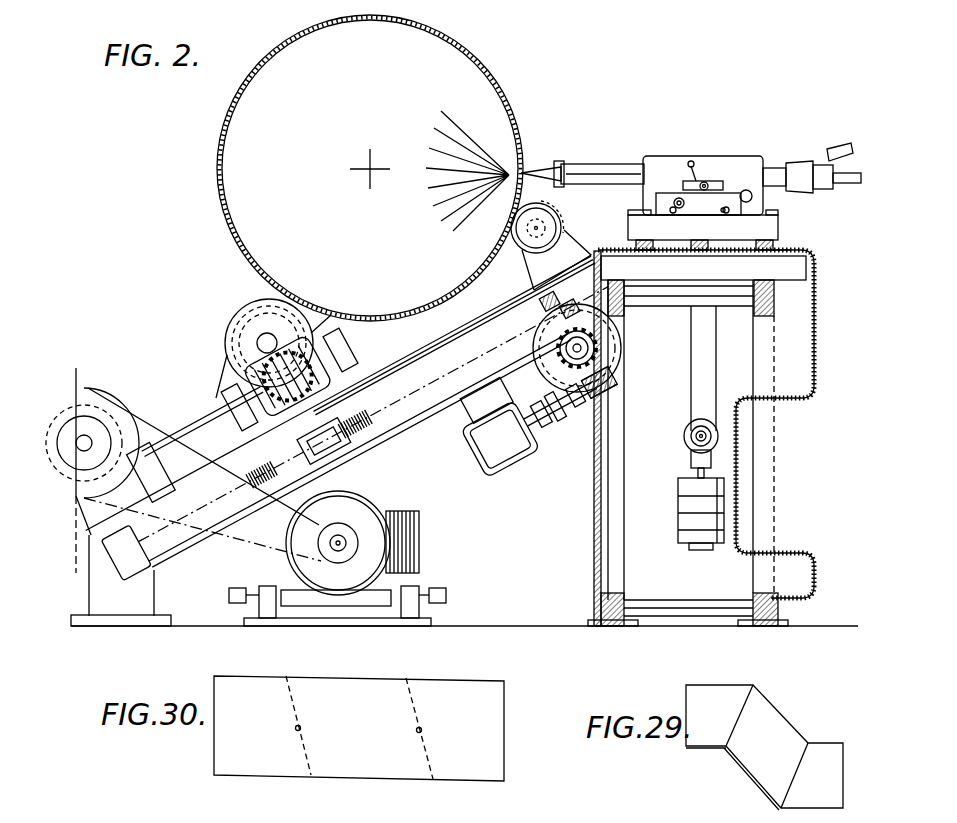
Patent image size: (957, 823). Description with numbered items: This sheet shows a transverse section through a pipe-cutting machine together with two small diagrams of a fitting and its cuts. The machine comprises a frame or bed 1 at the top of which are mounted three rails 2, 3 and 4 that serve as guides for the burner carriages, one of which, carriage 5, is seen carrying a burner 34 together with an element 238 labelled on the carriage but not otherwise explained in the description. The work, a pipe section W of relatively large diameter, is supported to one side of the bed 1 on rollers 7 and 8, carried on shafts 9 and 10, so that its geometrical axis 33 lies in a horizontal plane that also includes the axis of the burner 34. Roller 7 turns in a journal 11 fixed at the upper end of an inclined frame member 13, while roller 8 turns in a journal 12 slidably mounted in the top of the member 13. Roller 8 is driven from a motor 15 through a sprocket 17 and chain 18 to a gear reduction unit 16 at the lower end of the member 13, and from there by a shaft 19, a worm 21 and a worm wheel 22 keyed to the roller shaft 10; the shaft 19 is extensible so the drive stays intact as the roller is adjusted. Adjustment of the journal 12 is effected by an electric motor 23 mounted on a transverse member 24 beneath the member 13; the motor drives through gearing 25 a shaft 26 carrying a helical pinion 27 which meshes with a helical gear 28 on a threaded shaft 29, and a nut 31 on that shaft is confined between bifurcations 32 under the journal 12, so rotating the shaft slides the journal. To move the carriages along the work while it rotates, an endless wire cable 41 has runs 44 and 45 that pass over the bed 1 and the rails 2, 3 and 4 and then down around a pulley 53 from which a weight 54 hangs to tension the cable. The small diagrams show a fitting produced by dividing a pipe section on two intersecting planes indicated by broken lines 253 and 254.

In FIG. 2, the pipe section W is at (217, 130).
In FIG. 2, the geometrical axis 33 is at (369, 166).
In FIG. 2, the burner 34 is at (590, 162).
In FIG. 2, the burner carriage 5 is at (716, 153).
In FIG. 2, the cable run 44 is at (678, 196).
In FIG. 2, the lever 238 is at (703, 187).
In FIG. 2, the cable run 45 is at (722, 205).
In FIG. 2, the rail 3 is at (702, 243).
In FIG. 2, the rail 2 is at (633, 247).
In FIG. 2, the rail 4 is at (780, 248).
In FIG. 2, the frame or bed 1 is at (822, 303).
In FIG. 2, the endless conveyor 41 is at (716, 350).
In FIG. 2, the pulley 53 is at (685, 438).
In FIG. 2, the weight 54 is at (680, 504).
In FIG. 2, the shaft 9 is at (540, 218).
In FIG. 2, the roller 7 is at (556, 216).
In FIG. 2, the journal 11 is at (577, 246).
In FIG. 2, the helical gear 28 is at (545, 300).
In FIG. 2, the shaft 26 is at (585, 343).
In FIG. 2, the helical pinion 27 is at (600, 348).
In FIG. 2, the gearing 25 is at (592, 396).
In FIG. 2, the electric motor 23 is at (492, 478).
In FIG. 2, the transverse member 24 is at (492, 397).
In FIG. 2, the inclined frame member 13 is at (417, 415).
In FIG. 2, the threaded shaft 29 is at (470, 347).
In FIG. 2, the bifurcation 32 is at (360, 407).
In FIG. 2, the nut 31 is at (345, 450).
In FIG. 2, the worm 21 is at (345, 362).
In FIG. 2, the worm wheel 22 is at (322, 350).
In FIG. 2, the roller 8 is at (232, 322).
In FIG. 2, the roller shaft 10 is at (268, 338).
In FIG. 2, the journal 12 is at (226, 356).
In FIG. 2, the shaft 19 is at (210, 416).
In FIG. 2, the gear reduction unit 16 is at (150, 472).
In FIG. 2, the sprocket 17 is at (100, 402).
In FIG. 2, the chain 18 is at (222, 535).
In FIG. 2, the motor 15 is at (372, 506).
In FIG. 30, the broken line 253 is at (290, 705).
In FIG. 30, the broken line 254 is at (412, 708).